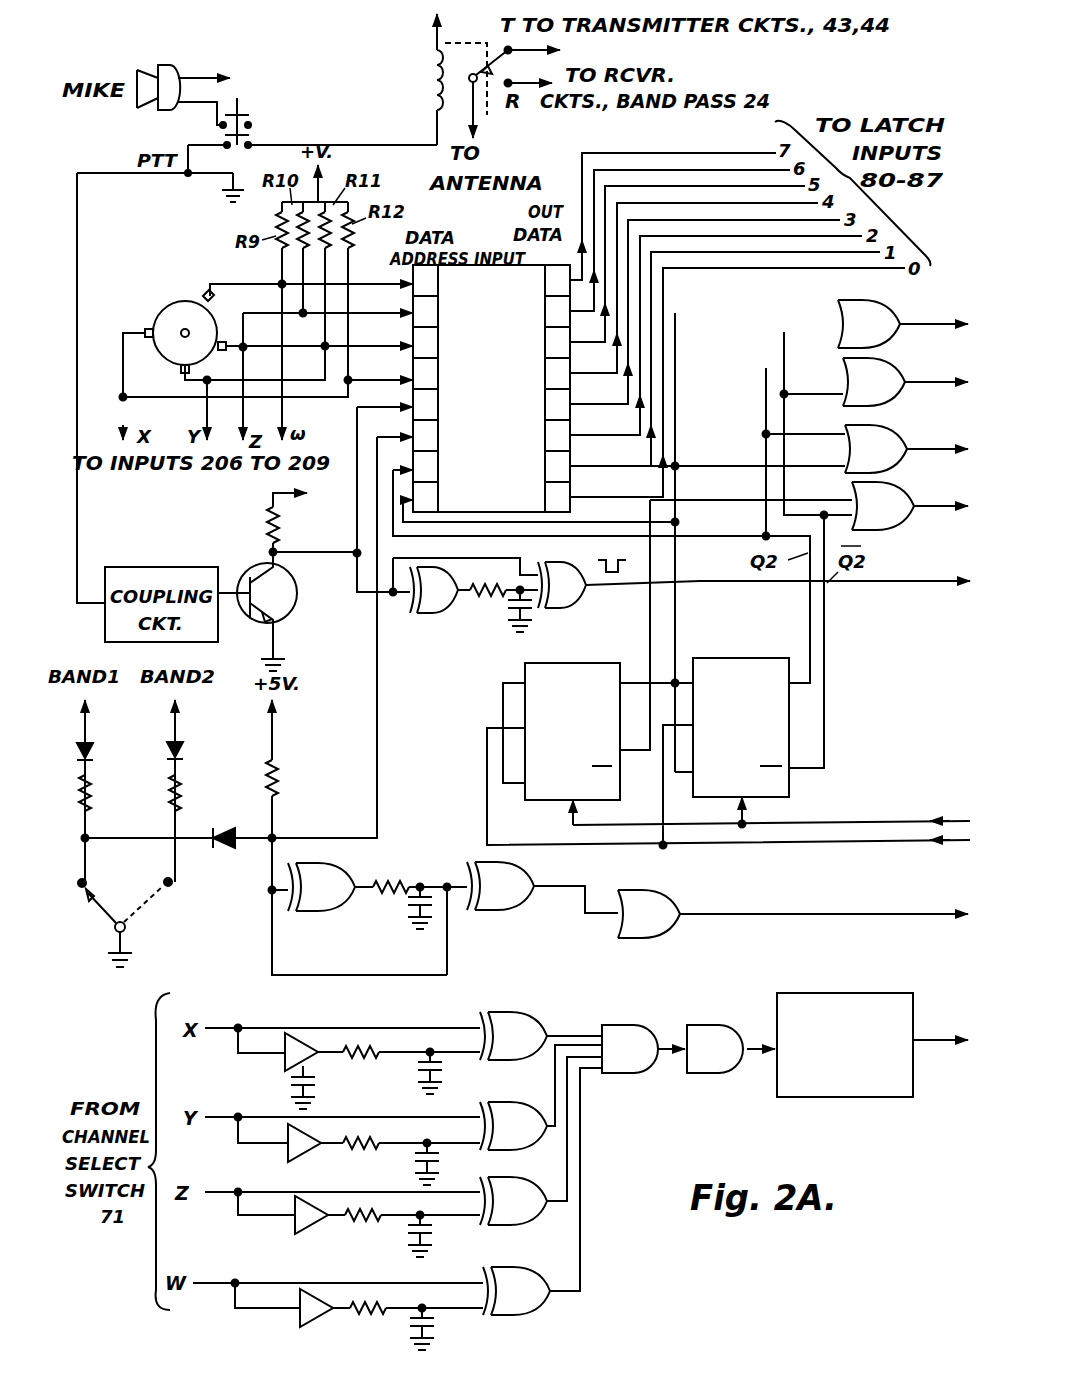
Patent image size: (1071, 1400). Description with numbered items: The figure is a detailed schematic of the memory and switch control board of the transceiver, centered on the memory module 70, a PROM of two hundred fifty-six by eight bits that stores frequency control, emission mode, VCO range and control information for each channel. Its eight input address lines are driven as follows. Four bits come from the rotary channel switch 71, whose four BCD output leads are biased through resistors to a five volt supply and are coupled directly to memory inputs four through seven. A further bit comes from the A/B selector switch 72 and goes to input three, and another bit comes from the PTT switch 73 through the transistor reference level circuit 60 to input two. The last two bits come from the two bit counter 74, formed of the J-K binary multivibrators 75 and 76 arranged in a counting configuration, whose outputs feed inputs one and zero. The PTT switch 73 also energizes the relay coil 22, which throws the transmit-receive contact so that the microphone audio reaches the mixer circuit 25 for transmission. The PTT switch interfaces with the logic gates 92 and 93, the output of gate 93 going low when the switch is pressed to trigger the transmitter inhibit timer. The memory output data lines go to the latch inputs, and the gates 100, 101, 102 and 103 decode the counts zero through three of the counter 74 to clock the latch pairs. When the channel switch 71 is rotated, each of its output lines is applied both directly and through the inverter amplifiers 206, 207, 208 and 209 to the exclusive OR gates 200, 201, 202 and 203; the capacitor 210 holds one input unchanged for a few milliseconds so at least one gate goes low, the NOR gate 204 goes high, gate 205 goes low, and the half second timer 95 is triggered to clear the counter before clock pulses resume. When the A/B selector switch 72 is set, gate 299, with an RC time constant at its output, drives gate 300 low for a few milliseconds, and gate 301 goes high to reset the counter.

The relay coil 22 is at (450, 79).
The mixer circuit 25 is at (269, 50).
The transistor reference level circuit 60 is at (292, 606).
The memory module 70 is at (447, 401).
The rotary channel switch 71 is at (153, 318).
The A/B selector switch 72 is at (148, 912).
The PTT switch 73 is at (212, 133).
The two bit counter 74 is at (728, 733).
The J-K binary multivibrator 75 is at (600, 663).
The J-K binary multivibrator 76 is at (775, 658).
The logic gate 92 is at (446, 612).
The logic gate 93 is at (598, 596).
The half second timer 95 is at (868, 993).
The gate 100 is at (878, 308).
The gate 101 is at (882, 366).
The gate 102 is at (887, 430).
The gate 103 is at (890, 490).
The exclusive OR gate 200 is at (540, 1260).
The exclusive OR gate 201 is at (550, 1172).
The exclusive OR gate 202 is at (525, 1095).
The exclusive OR gate 203 is at (535, 1004).
The NOR gate 204 is at (626, 1020).
The gate 205 is at (716, 1020).
The inverter amplifier 206 is at (290, 1070).
The inverter amplifier 207 is at (292, 1150).
The inverter amplifier 208 is at (300, 1232).
The inverter amplifier 209 is at (300, 1312).
The capacitor 210 is at (317, 1081).
The gate 299 is at (334, 912).
The gate 300 is at (508, 910).
The gate 301 is at (662, 892).